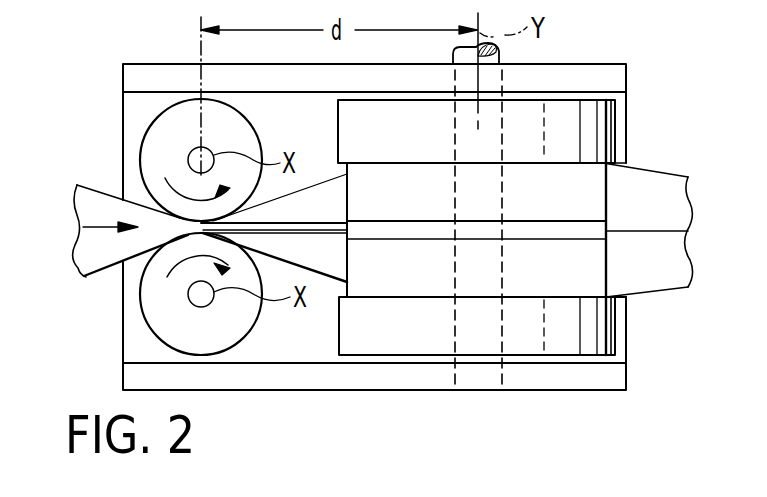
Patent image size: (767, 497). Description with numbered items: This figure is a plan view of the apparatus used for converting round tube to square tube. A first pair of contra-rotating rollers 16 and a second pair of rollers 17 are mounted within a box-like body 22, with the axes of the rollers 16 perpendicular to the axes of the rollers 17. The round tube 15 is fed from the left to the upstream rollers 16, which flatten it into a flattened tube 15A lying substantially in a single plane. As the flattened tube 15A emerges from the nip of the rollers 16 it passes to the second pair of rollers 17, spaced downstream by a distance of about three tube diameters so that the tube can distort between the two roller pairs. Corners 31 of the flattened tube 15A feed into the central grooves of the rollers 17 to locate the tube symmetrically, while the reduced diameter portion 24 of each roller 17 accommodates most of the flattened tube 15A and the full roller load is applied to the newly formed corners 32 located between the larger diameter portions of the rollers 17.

The round tube 15 is at (92, 263).
The flattened tube 15A is at (348, 258).
The first pair of rollers 16 is at (152, 147).
The second pair of rollers 17 is at (592, 135).
The box-like body 22 is at (617, 378).
The reduced diameter portion 24 is at (570, 285).
The corners of the flattened tube 31 is at (675, 233).
The newly formed corners 32 is at (673, 173).